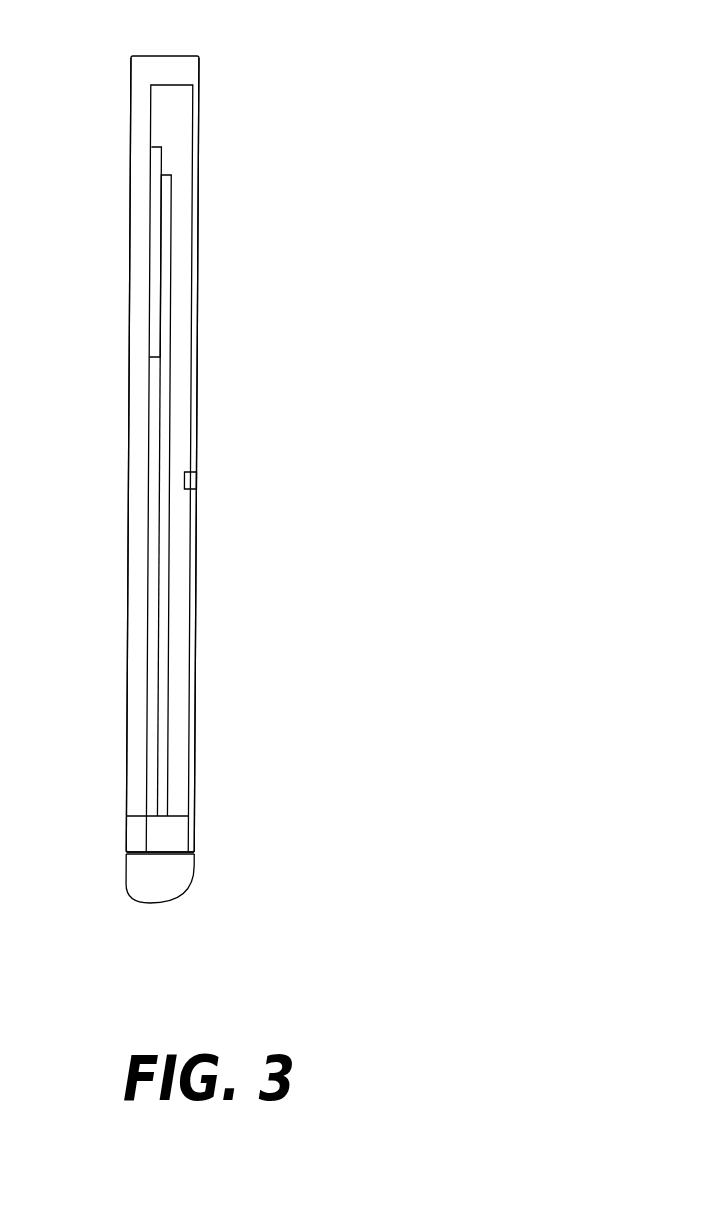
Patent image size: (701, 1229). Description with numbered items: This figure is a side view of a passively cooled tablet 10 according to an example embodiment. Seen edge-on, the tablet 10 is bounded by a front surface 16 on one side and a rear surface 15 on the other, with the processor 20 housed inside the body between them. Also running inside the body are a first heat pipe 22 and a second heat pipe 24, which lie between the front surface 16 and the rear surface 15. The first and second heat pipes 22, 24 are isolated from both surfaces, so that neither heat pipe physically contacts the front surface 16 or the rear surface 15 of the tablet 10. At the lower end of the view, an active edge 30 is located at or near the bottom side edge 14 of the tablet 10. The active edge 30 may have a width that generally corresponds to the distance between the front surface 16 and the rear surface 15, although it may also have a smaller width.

The tablet 10 is at (293, 85).
The bottom side edge 14 is at (137, 901).
The rear surface 15 is at (199, 123).
The front surface 16 is at (131, 128).
The processor 20 is at (155, 322).
The first heat pipe 22 is at (167, 449).
The second heat pipe 24 is at (263, 469).
The active edge 30 is at (168, 838).